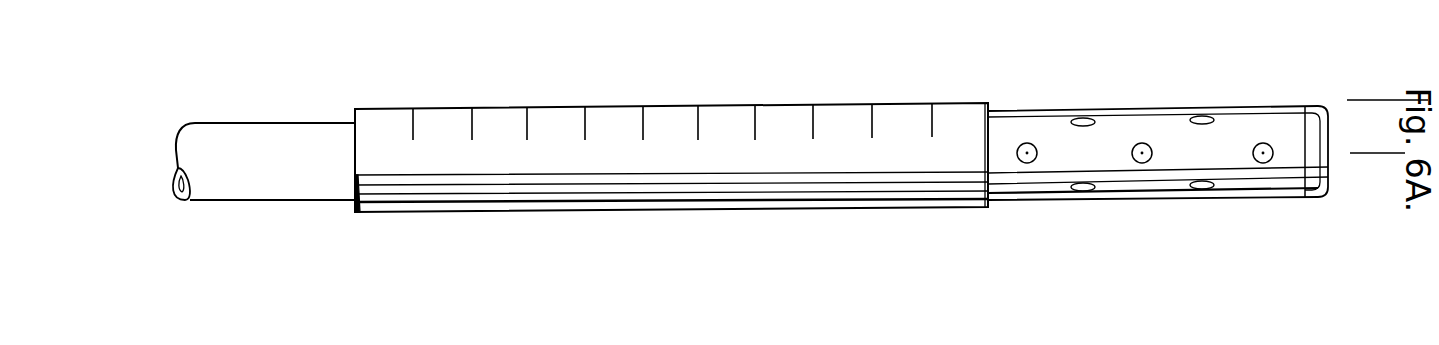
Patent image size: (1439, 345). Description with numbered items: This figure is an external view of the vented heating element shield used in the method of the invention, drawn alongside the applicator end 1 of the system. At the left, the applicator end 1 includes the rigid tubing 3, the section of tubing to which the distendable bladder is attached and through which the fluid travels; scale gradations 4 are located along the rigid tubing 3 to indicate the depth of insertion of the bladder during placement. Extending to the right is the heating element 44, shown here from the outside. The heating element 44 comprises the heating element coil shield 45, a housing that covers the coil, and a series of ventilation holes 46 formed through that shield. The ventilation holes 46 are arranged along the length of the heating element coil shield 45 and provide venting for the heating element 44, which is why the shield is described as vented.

The applicator end 1 is at (312, 255).
The rigid tubing 3 is at (733, 202).
The scale gradations 4 is at (699, 106).
The heating element 44 is at (1048, 210).
The heating element coil shield 45 is at (1290, 183).
The ventilation holes 46 is at (1142, 163).